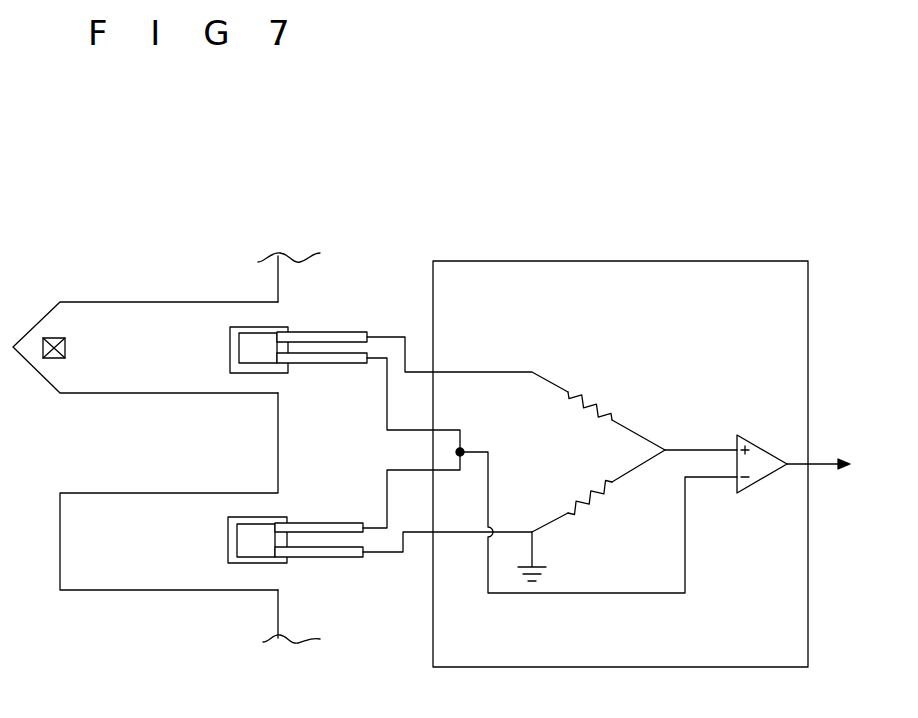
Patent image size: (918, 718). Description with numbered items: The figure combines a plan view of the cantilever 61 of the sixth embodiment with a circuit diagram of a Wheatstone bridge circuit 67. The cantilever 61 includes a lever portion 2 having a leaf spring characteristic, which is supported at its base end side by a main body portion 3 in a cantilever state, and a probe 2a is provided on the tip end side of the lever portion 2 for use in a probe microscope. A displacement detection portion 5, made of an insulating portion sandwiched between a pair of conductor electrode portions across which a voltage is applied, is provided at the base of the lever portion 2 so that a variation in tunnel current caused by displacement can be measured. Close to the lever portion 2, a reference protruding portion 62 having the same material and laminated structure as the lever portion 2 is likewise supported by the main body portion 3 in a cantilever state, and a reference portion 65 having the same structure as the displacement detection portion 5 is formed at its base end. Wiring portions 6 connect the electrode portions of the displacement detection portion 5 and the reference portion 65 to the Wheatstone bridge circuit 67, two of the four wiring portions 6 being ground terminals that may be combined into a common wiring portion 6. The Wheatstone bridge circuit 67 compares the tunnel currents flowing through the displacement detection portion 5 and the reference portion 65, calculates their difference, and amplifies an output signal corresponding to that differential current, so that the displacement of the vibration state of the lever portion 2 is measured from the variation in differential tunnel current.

The lever portion 2 is at (90, 302).
The probe 2a is at (53, 338).
The main body portion 3 is at (262, 262).
The displacement detection portion 5 is at (250, 316).
The wiring portions 6 is at (325, 332).
The cantilever 61 is at (145, 380).
The reference protruding portion 62 is at (98, 493).
The reference portion 65 is at (245, 577).
The Wheatstone bridge circuit 67 is at (632, 261).